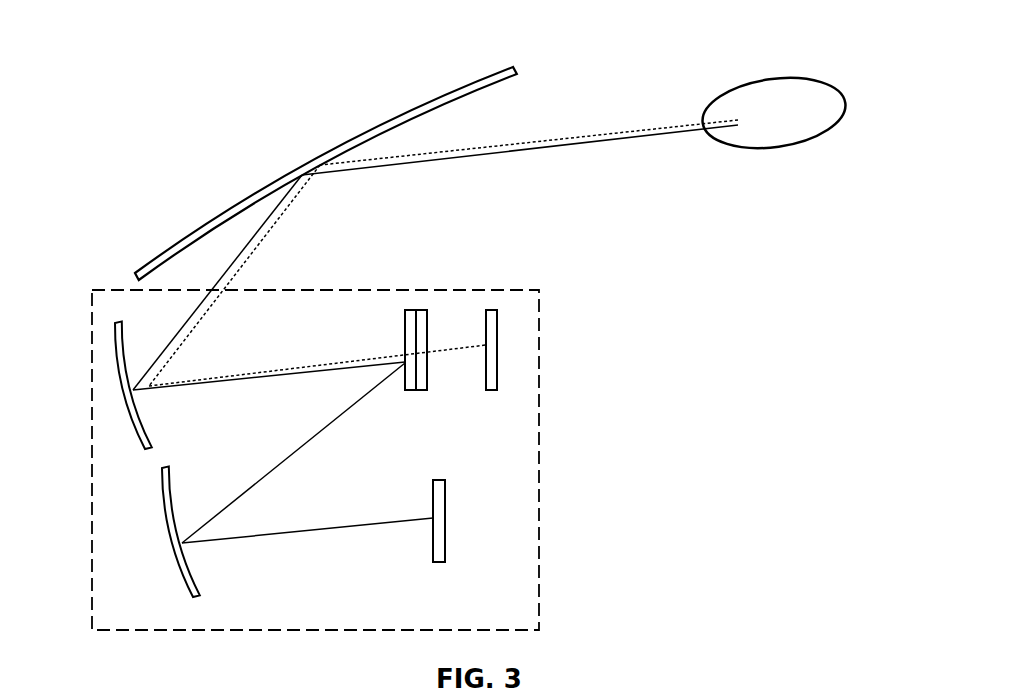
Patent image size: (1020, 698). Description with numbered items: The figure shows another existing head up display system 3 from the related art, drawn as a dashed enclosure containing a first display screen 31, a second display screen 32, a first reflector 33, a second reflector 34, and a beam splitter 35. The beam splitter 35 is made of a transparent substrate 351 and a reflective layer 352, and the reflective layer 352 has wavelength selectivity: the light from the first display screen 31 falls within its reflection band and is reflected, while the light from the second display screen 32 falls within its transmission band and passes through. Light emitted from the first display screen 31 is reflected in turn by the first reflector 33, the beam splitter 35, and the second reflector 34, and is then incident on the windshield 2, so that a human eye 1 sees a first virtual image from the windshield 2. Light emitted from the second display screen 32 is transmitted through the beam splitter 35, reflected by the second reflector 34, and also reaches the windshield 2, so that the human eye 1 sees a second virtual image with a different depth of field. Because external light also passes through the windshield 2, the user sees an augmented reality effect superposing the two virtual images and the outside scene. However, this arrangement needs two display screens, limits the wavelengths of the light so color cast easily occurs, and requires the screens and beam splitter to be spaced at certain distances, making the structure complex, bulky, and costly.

The human eye 1 is at (845, 103).
The windshield 2 is at (383, 121).
The head up display system 3 is at (539, 462).
The first display screen 31 is at (445, 518).
The second display screen 32 is at (497, 342).
The first reflector 33 is at (180, 573).
The second reflector 34 is at (115, 356).
The beam splitter 35 is at (411, 281).
The transparent substrate 351 is at (443, 310).
The reflective layer 352 is at (407, 312).